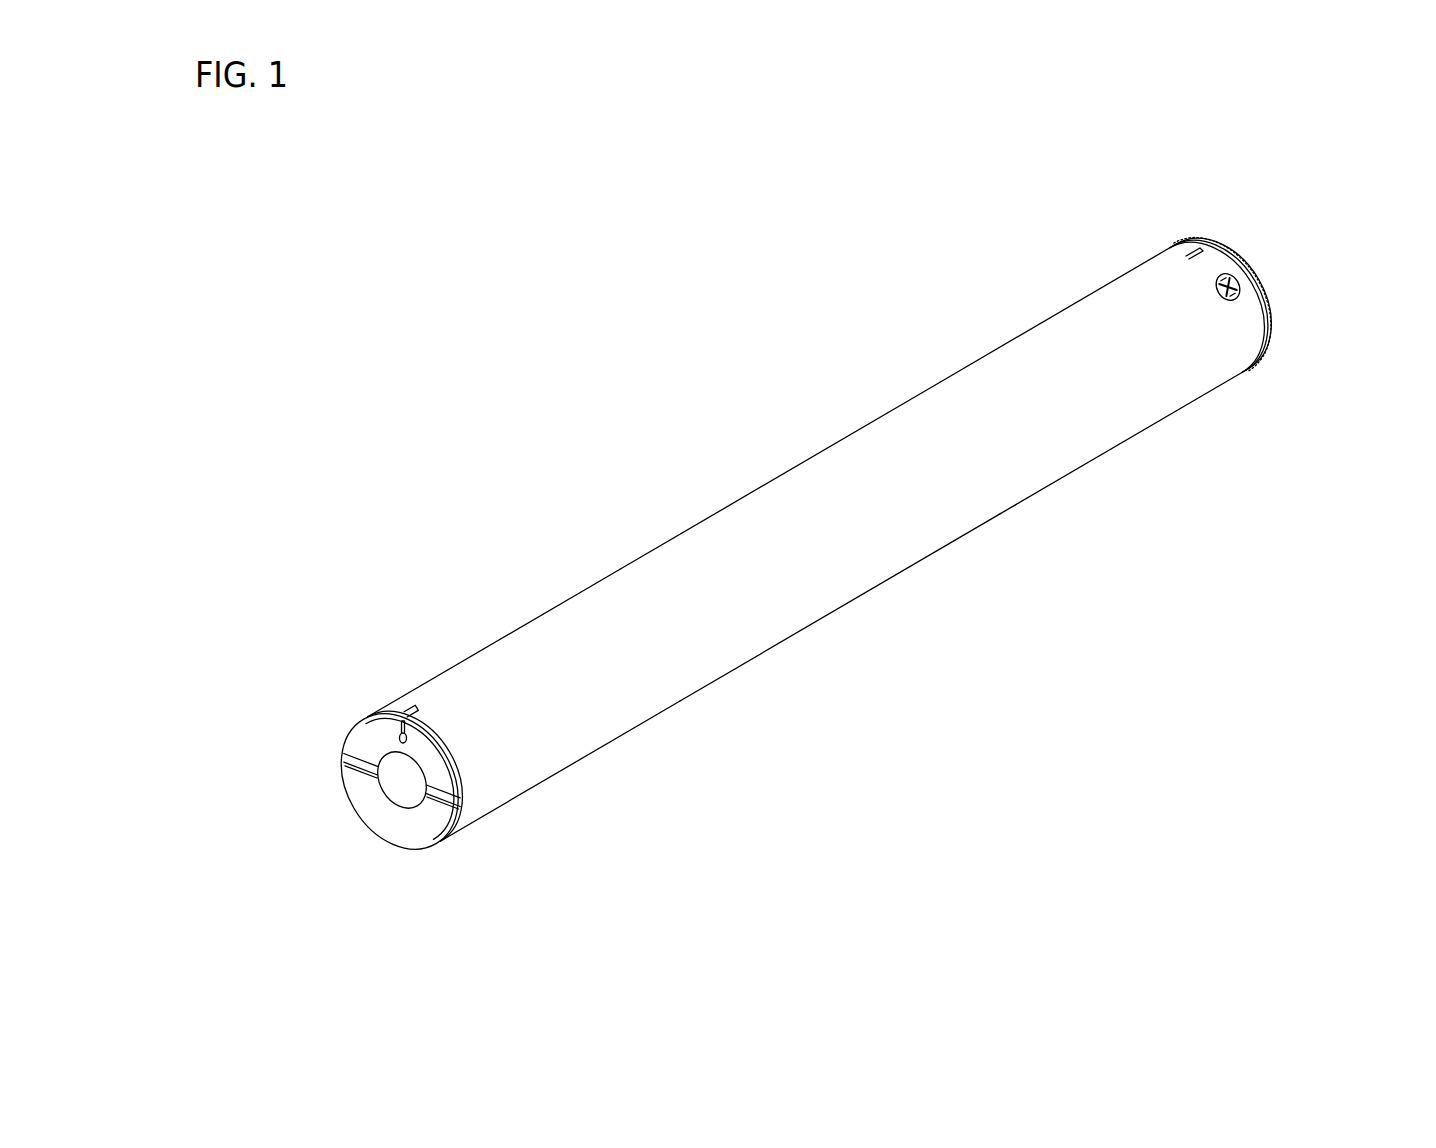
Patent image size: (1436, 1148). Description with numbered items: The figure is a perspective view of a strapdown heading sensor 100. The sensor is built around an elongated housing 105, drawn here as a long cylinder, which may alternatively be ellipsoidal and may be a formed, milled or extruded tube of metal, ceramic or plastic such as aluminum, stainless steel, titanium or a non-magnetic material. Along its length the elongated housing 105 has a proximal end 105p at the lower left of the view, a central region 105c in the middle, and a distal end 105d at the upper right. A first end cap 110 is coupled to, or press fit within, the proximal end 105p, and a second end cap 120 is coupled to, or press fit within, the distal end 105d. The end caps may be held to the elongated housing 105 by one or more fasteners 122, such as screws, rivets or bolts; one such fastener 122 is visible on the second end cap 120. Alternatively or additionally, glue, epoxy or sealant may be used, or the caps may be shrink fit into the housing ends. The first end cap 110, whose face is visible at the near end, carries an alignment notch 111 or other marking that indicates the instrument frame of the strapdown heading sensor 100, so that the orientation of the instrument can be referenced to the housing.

The strapdown heading sensor 100 is at (1182, 133).
The elongated housing 105 is at (832, 614).
The central region 105c is at (692, 512).
The distal end 105d is at (1140, 250).
The proximal end 105p is at (452, 643).
The first end cap 110 is at (412, 846).
The alignment notch 111 is at (398, 740).
The second end cap 120 is at (1268, 342).
The fastener 122 is at (1243, 273).